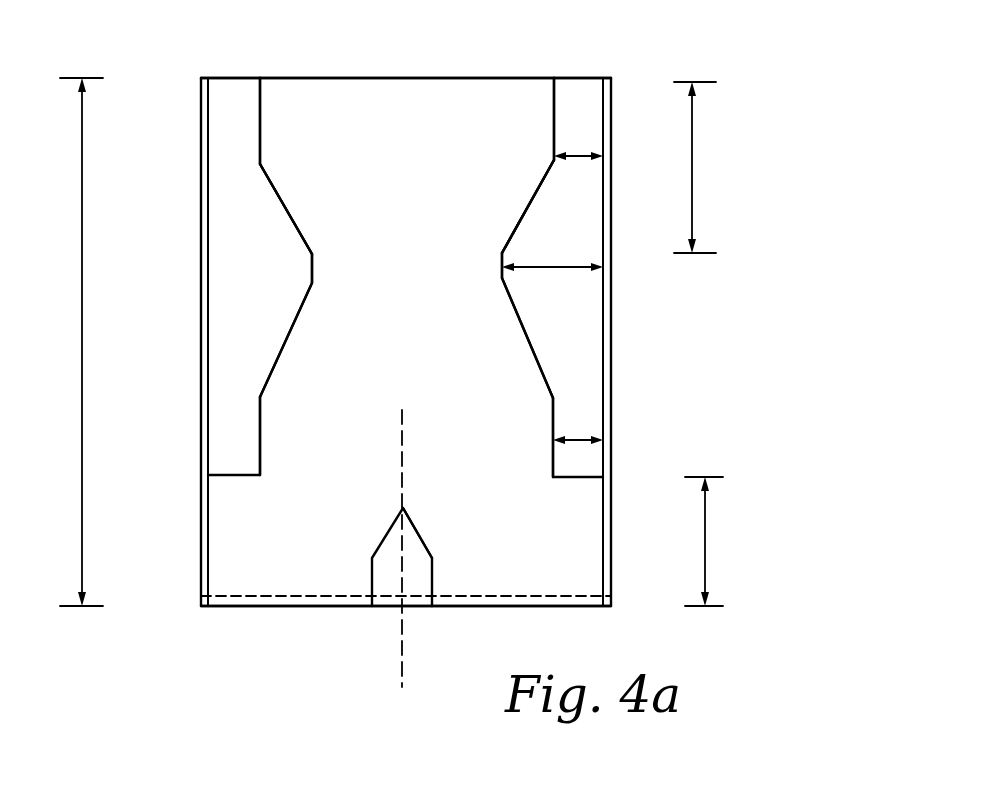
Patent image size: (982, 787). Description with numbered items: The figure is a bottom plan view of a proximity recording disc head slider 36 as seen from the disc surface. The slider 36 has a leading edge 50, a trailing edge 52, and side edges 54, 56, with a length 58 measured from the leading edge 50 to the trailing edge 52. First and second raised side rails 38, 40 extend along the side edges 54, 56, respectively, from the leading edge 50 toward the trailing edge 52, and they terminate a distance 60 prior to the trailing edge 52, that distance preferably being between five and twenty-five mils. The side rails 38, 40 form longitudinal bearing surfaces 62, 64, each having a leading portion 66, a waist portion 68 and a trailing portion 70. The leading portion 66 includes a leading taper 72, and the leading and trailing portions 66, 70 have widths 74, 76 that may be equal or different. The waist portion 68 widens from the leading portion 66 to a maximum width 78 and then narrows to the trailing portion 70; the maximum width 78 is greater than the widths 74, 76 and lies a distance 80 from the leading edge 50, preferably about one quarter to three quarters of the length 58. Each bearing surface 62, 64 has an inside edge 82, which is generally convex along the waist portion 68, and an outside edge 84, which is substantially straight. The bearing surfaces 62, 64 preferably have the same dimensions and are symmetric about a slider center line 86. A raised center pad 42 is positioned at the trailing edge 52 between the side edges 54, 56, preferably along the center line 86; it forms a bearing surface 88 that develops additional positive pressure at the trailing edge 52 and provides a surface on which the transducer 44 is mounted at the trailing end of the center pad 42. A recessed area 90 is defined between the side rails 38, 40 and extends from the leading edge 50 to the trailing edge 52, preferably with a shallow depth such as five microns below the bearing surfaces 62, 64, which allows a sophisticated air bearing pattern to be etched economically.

The slider 36 is at (478, 72).
The first raised side rail 38 is at (588, 72).
The second raised side rail 40 is at (241, 72).
The raised center pad 42 is at (360, 552).
The transducer 44 is at (412, 608).
The leading edge 50 is at (411, 78).
The trailing edge 52 is at (300, 608).
The side edge 54 is at (611, 527).
The side edge 56 is at (201, 518).
The length 58 is at (82, 317).
The distance 60 is at (705, 540).
The longitudinal bearing surface 62 is at (578, 342).
The longitudinal bearing surface 64 is at (232, 356).
The leading portion 66 is at (262, 152).
The waist portion 68 is at (283, 203).
The trailing portion 70 is at (262, 413).
The leading taper 72 is at (233, 103).
The width 74 is at (582, 158).
The width 76 is at (582, 440).
The maximum width 78 is at (557, 268).
The distance 80 is at (692, 152).
The inside edge 82 is at (296, 318).
The outside edge 84 is at (201, 290).
The slider center line 86 is at (402, 456).
The bearing surface 88 is at (420, 536).
The recessed area 90 is at (388, 274).